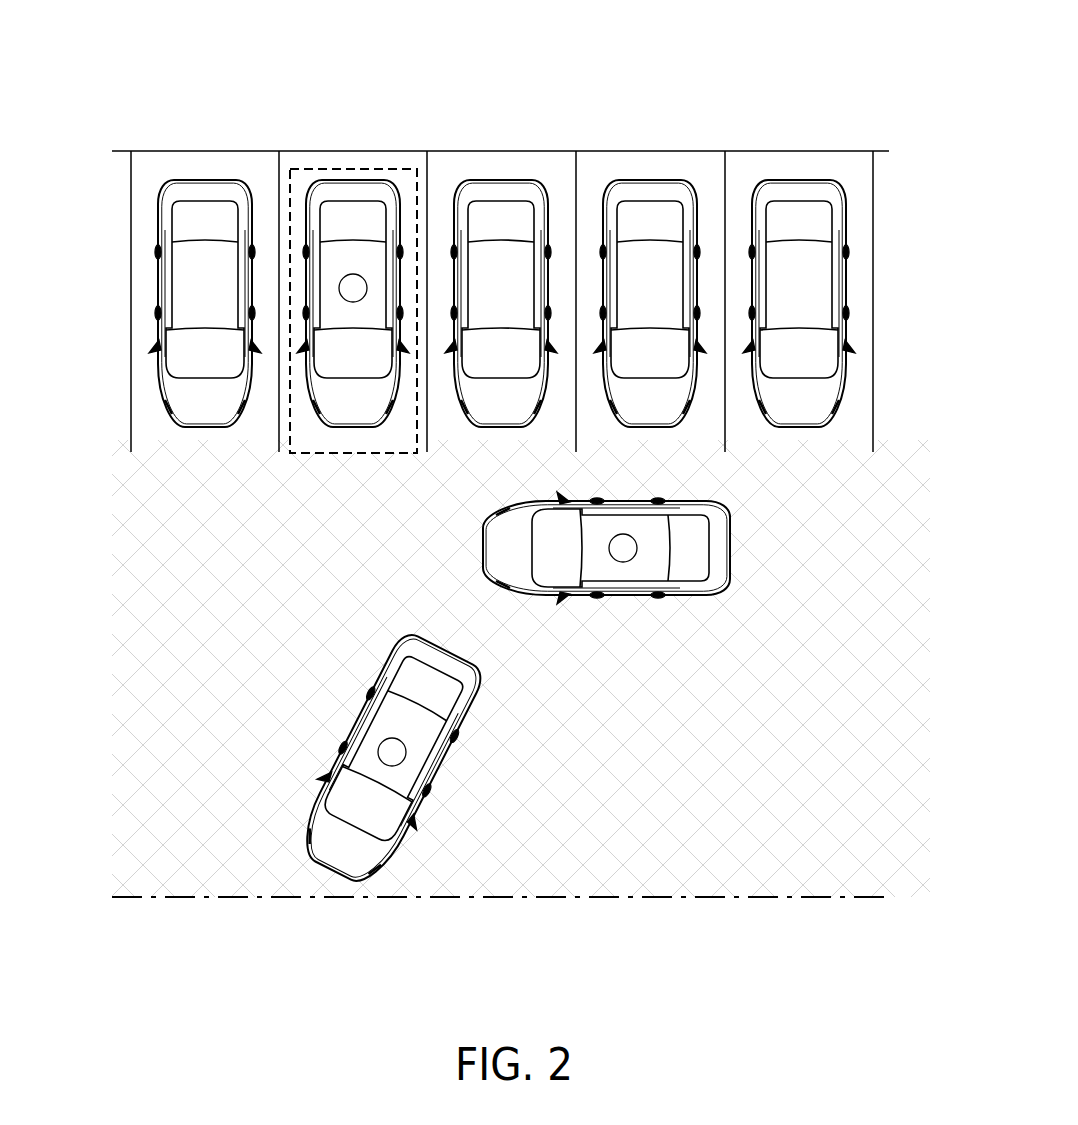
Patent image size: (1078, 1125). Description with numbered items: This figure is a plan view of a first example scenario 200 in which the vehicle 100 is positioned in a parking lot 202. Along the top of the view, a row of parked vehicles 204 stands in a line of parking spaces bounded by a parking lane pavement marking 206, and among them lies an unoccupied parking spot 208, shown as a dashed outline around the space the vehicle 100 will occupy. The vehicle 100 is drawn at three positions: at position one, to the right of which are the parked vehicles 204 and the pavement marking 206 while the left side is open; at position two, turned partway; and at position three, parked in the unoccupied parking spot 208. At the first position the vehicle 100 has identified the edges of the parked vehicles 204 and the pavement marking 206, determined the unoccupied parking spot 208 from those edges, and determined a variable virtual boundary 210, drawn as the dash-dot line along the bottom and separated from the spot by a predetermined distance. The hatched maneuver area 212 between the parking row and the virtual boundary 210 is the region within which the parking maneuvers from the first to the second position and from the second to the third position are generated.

The parking environment 200 is at (745, 61).
The parking lot 202 is at (92, 131).
The parked vehicles 204 is at (205, 181).
The vehicle 100 is at (354, 181).
The unoccupied parking spot 208 is at (393, 167).
The parking lane pavement marking 206 is at (428, 432).
The variable virtual boundary 210 is at (458, 899).
The maneuver area 212 is at (110, 671).